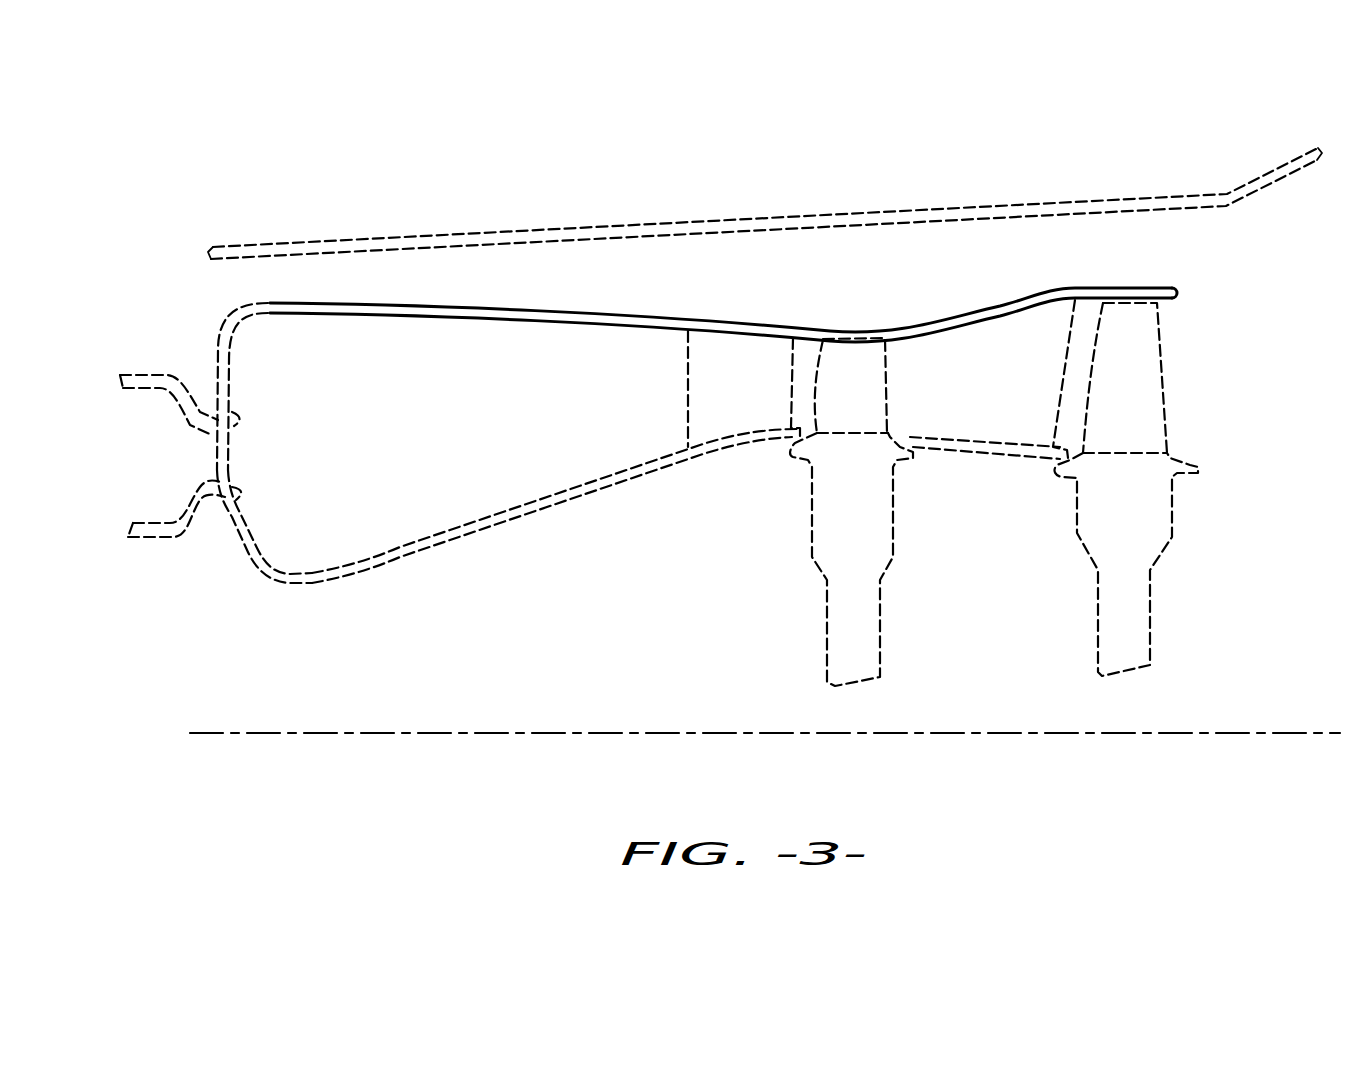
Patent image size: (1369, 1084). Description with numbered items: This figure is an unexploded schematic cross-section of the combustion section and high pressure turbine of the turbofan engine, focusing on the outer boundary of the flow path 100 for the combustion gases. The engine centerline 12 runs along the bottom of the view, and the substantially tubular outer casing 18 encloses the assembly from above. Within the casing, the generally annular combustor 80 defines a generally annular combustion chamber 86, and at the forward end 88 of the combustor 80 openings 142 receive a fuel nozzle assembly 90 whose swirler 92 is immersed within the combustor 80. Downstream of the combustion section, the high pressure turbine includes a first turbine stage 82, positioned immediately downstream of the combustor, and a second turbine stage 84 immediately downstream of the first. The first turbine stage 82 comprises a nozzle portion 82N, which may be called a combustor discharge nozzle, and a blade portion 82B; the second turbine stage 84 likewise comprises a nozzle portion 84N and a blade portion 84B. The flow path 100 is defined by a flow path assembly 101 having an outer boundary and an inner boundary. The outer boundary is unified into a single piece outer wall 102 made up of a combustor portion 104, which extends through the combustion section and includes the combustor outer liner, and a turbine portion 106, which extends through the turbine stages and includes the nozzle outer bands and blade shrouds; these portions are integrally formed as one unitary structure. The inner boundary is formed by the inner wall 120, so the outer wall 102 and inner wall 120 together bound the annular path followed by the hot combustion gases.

The engine centerline axis 12 is at (342, 728).
The outer casing 18 is at (375, 237).
The combustor 80 is at (537, 530).
The first turbine stage 82 is at (858, 273).
The nozzle portion 82N is at (715, 307).
The blade portion 82B is at (837, 307).
The second turbine stage 84 is at (1063, 253).
The nozzle portion 84N is at (997, 295).
The blade portion 84B is at (1143, 275).
The combustion chamber 86 is at (399, 420).
The forward end 88 is at (205, 339).
The fuel nozzle assembly 90 is at (155, 558).
The swirler 92 is at (203, 493).
The flow path 100 is at (358, 522).
The flow path assembly 101 is at (273, 583).
The outer wall 102 is at (537, 313).
The combustor portion 104 is at (562, 270).
The turbine portion 106 is at (972, 246).
The inner wall 120 is at (490, 513).
The openings 142 is at (248, 451).